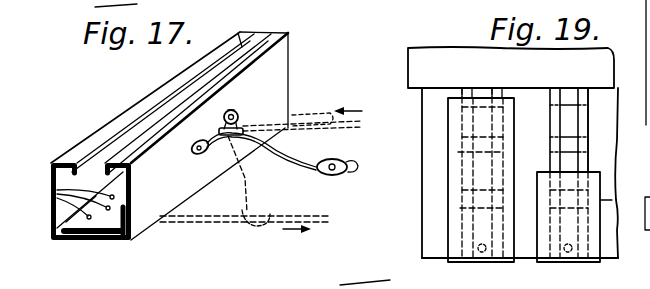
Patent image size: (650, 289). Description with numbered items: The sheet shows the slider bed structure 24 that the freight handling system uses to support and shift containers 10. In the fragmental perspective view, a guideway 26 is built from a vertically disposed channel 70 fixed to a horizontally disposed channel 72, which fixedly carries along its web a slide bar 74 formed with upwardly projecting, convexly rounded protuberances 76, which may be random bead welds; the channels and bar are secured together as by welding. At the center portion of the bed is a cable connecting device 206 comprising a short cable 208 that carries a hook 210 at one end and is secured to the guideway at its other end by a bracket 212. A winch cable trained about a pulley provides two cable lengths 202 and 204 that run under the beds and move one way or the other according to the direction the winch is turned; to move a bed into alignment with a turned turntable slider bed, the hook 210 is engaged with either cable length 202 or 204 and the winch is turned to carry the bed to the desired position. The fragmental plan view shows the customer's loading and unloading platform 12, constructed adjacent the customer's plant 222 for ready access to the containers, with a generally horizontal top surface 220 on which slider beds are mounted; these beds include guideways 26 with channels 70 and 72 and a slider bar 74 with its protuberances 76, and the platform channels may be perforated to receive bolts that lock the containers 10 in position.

In FIG. 17, the guideway 26 is at (113, 115).
In FIG. 19, the guideway 26 is at (500, 96).
In FIG. 17, the vertically disposed channel 70 is at (50, 208).
In FIG. 17, the horizontally disposed channel 72 is at (90, 239).
In FIG. 17, the slide bar 74 is at (62, 241).
In FIG. 17, the protuberance 76 is at (56, 191).
In FIG. 17, the cable connecting device 206 is at (202, 124).
In FIG. 17, the bracket 212 is at (230, 110).
In FIG. 17, the cable length 202 is at (317, 128).
In FIG. 17, the cable length 204 is at (245, 192).
In FIG. 17, the short cable 208 is at (252, 164).
In FIG. 17, the hook 210 is at (358, 177).
In FIG. 19, the customer's plant 222 is at (428, 58).
In FIG. 19, the loading and unloading platform 12 is at (428, 177).
In FIG. 19, the top surface 220 is at (430, 227).
In FIG. 19, the container 10 is at (515, 124).
In FIG. 19, the slider bed structure 24 is at (594, 138).